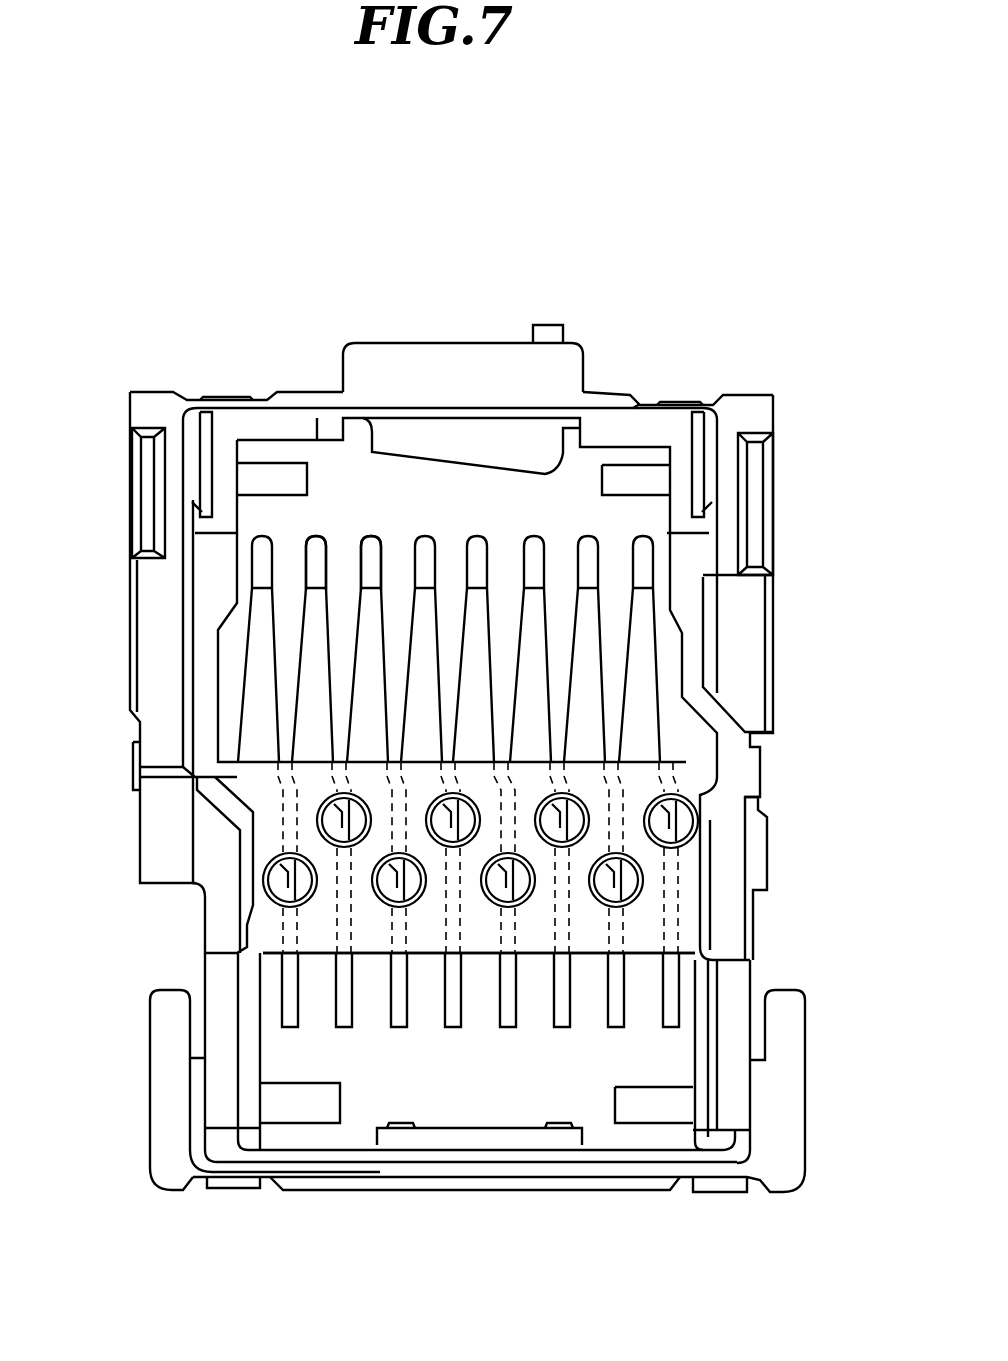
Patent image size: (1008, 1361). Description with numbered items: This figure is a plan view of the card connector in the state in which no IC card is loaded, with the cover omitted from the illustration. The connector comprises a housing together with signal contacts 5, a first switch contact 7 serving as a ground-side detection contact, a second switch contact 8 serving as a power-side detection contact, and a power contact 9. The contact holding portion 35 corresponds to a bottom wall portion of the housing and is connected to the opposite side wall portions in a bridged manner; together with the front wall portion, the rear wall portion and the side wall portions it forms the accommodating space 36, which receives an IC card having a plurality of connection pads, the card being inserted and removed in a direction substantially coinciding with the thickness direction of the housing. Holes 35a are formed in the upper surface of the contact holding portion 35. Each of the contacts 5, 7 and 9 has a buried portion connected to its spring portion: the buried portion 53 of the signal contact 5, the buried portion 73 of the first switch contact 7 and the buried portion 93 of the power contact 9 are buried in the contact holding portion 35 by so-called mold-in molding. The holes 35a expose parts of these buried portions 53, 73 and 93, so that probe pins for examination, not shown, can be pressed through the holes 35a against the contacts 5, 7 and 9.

The signal contacts 5 is at (263, 520).
The first switch contact 7 is at (350, 540).
The second switch contact 8 is at (451, 417).
The power contact 9 is at (490, 517).
The accommodating space 36 is at (437, 500).
The contact holding portion 35 is at (480, 930).
The holes 35a is at (340, 813).
The buried portion 53 is at (293, 905).
The buried portion 73 is at (398, 905).
The buried portion 93 is at (500, 878).